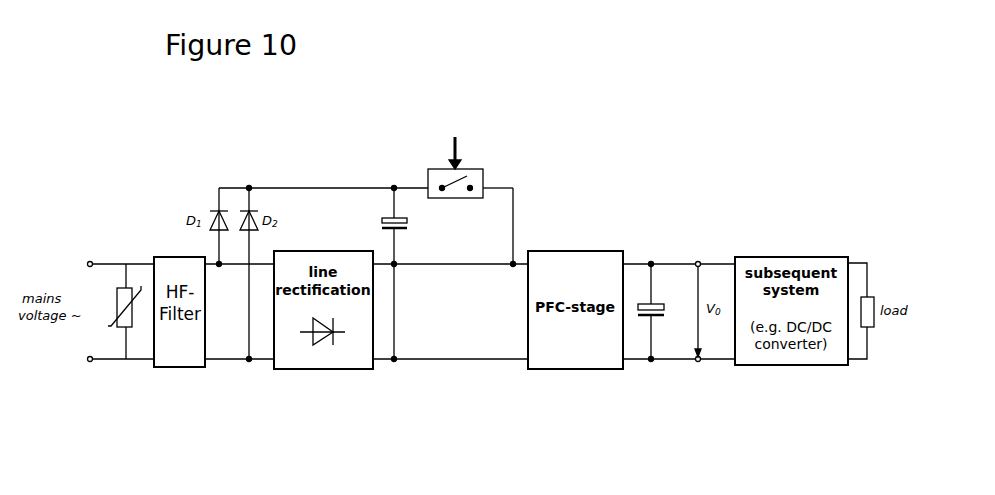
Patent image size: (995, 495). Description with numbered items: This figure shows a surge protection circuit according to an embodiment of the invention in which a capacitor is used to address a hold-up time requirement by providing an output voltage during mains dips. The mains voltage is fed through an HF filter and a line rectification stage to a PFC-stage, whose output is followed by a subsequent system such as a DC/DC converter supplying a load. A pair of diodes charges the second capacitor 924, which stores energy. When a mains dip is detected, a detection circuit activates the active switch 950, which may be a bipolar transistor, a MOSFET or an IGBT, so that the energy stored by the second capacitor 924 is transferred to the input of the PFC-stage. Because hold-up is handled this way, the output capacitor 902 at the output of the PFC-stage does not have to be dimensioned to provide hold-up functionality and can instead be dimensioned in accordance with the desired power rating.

The capacitor C2 924 is at (385, 218).
The active switch 950 is at (483, 173).
The output capacitor C1 902 is at (653, 317).